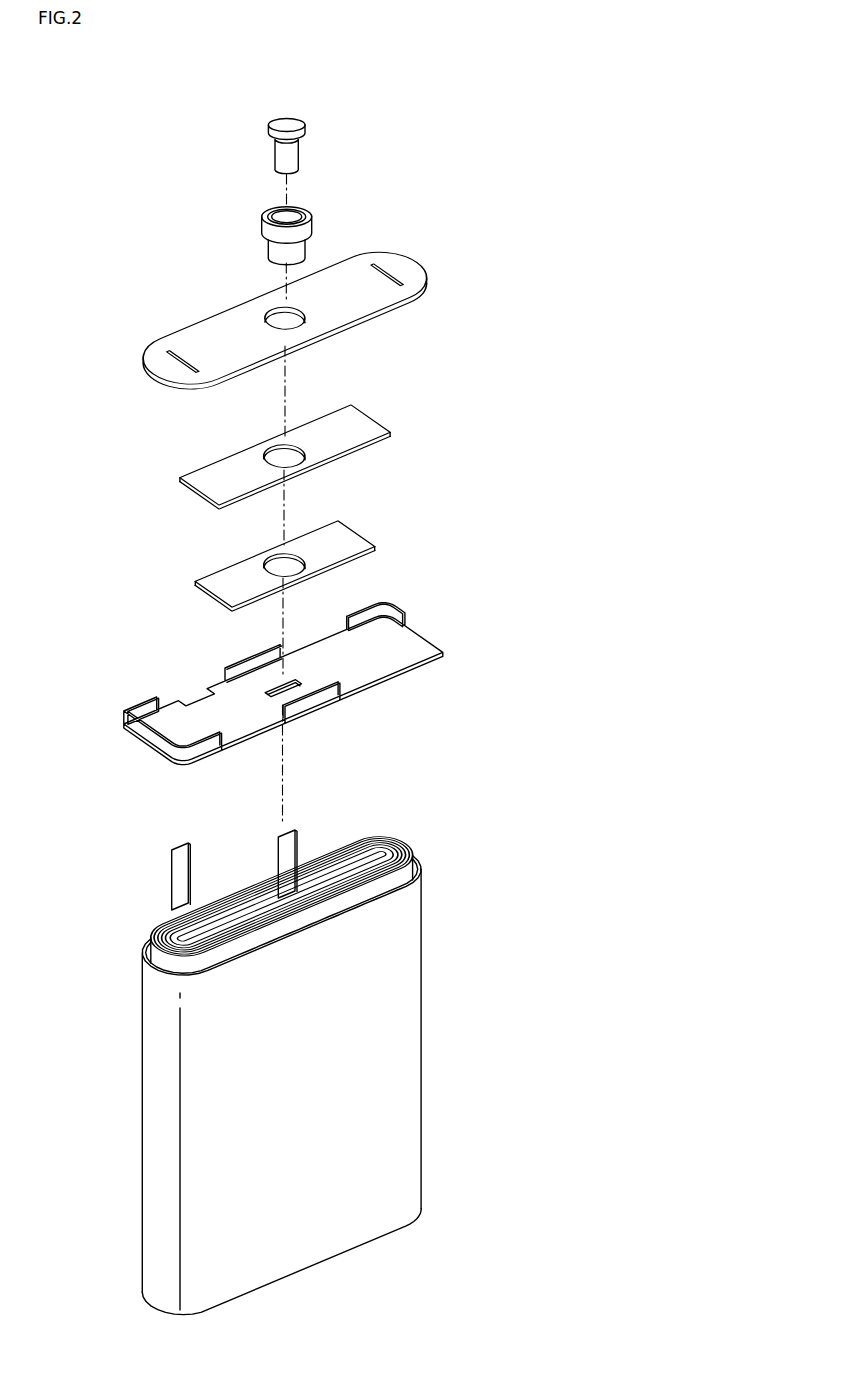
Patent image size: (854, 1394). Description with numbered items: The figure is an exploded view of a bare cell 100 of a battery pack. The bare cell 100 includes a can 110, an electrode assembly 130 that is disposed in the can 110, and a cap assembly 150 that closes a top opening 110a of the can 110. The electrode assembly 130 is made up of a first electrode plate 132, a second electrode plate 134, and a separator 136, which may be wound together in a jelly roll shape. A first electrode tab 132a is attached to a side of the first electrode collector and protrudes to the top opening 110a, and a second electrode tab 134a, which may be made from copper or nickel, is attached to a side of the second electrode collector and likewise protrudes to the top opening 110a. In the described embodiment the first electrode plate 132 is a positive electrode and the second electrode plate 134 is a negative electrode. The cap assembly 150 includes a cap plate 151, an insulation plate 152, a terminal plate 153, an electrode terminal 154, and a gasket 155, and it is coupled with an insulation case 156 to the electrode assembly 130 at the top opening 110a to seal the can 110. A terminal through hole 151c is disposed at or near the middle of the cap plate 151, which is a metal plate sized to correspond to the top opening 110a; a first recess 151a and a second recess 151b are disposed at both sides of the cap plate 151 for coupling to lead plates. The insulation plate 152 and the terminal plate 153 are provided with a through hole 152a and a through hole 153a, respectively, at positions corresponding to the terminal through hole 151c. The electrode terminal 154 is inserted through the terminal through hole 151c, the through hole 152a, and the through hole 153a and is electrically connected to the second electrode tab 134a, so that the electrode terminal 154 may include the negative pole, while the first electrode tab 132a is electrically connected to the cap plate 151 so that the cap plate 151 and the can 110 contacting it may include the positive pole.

The bare cell 100 is at (127, 108).
The can 110 is at (407, 1000).
The top opening 110a is at (420, 868).
The electrode assembly 130 is at (324, 831).
The first electrode plate 132 is at (282, 897).
The first electrode tab 132a is at (180, 870).
The second electrode plate 134 is at (407, 852).
The second electrode tab 134a is at (285, 851).
The separator 136 is at (282, 896).
The cap assembly 150 is at (392, 180).
The cap plate 151 is at (210, 331).
The first recess 151a is at (183, 362).
The second recess 151b is at (387, 275).
The terminal through hole 151c is at (285, 318).
The insulation plate 152 is at (367, 420).
The through hole 152a is at (275, 442).
The terminal plate 153 is at (352, 533).
The through hole 153a is at (275, 550).
The electrode terminal 154 is at (283, 117).
The gasket 155 is at (263, 214).
The insulation case 156 is at (417, 617).